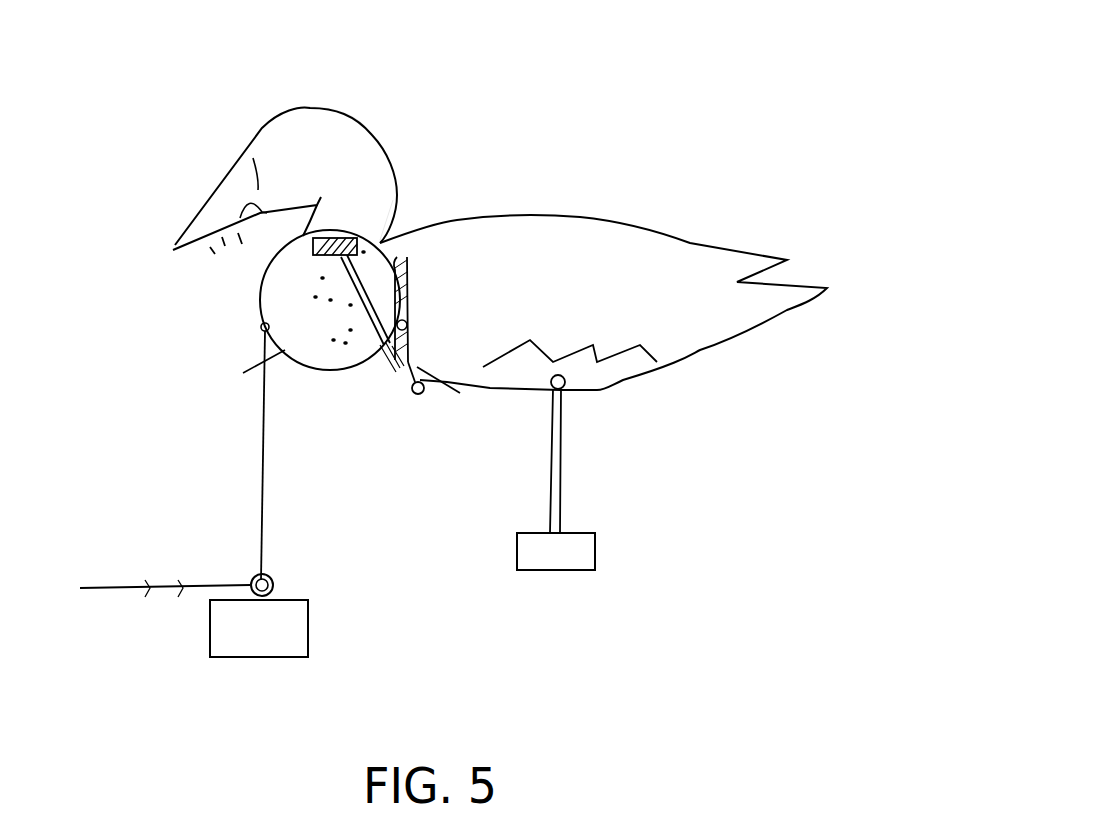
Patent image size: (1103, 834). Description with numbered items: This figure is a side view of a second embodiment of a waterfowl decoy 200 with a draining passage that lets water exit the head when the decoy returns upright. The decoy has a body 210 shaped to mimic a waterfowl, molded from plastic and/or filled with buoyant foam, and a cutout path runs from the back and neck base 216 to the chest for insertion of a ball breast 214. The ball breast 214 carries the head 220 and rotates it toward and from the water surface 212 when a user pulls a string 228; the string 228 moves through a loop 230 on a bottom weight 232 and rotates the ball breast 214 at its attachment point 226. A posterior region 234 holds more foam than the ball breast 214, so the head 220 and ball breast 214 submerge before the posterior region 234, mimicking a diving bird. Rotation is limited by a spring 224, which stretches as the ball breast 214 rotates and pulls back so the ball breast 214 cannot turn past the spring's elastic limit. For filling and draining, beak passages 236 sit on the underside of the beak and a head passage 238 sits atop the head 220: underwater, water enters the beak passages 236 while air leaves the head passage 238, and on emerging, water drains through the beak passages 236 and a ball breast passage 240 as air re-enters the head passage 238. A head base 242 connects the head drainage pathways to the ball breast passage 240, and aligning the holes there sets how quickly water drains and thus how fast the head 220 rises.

The waterfowl decoy 200 is at (523, 148).
The body 210 is at (453, 220).
The surface 212 is at (617, 366).
The ball breast 214 is at (264, 306).
The neck base 216 is at (370, 243).
The head 220 is at (310, 163).
The spring 224 is at (423, 385).
The attachment point 226 is at (243, 327).
The string 228 is at (263, 417).
The loop 230 is at (247, 577).
The bottom weight 232 is at (295, 613).
The posterior region 234 is at (690, 270).
The beak passages 236 is at (238, 261).
The head passage 238 is at (340, 117).
The ball breast passage 240 is at (330, 298).
The head base 242 is at (380, 267).